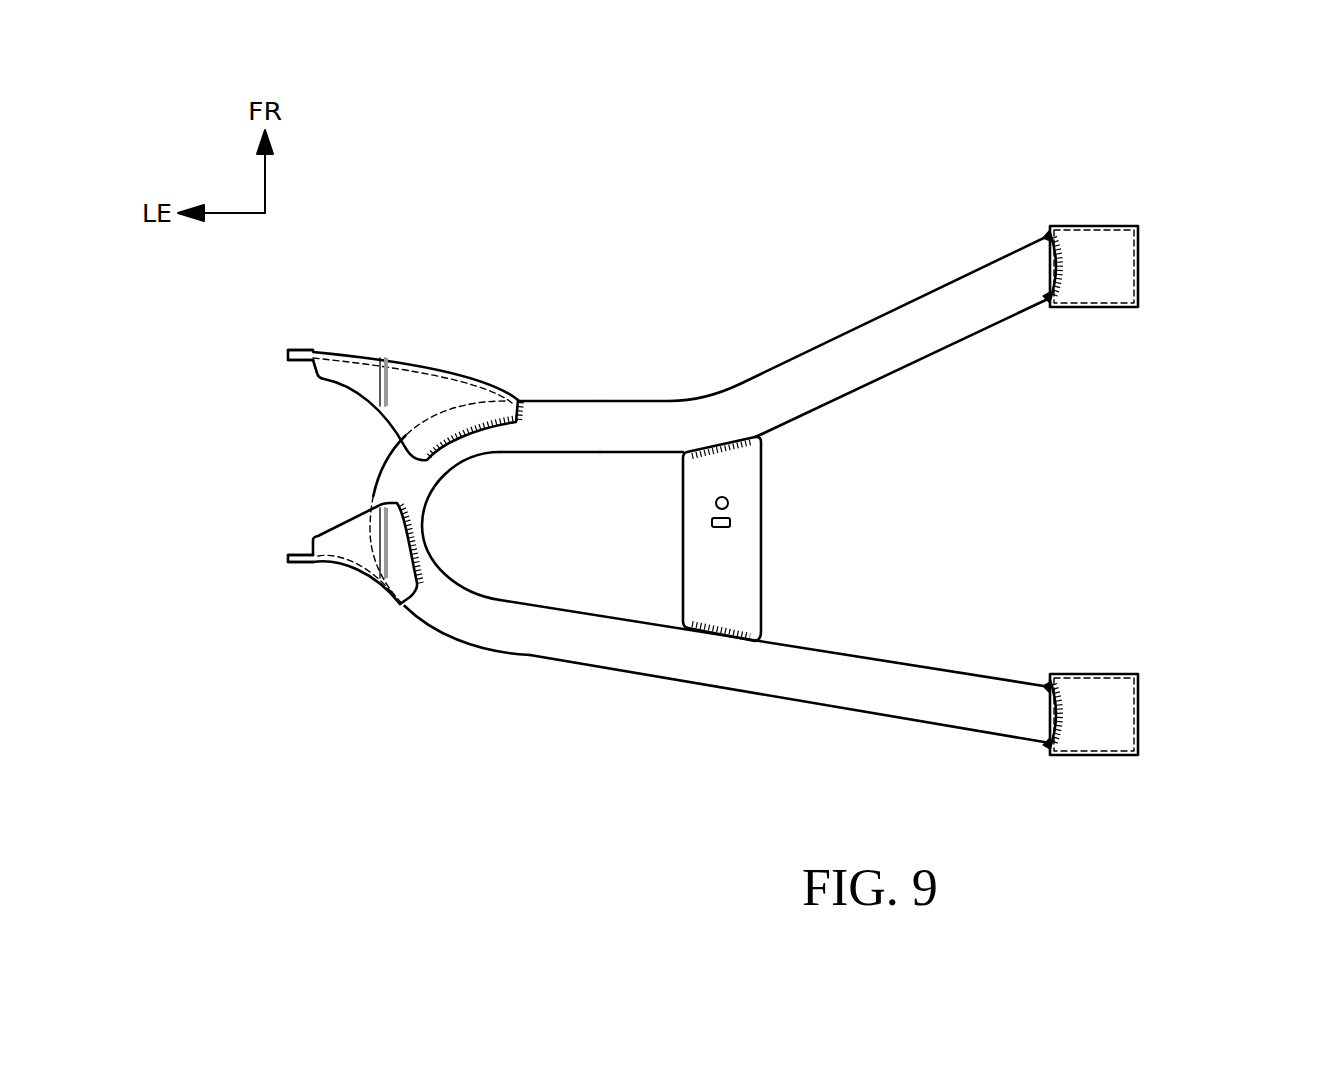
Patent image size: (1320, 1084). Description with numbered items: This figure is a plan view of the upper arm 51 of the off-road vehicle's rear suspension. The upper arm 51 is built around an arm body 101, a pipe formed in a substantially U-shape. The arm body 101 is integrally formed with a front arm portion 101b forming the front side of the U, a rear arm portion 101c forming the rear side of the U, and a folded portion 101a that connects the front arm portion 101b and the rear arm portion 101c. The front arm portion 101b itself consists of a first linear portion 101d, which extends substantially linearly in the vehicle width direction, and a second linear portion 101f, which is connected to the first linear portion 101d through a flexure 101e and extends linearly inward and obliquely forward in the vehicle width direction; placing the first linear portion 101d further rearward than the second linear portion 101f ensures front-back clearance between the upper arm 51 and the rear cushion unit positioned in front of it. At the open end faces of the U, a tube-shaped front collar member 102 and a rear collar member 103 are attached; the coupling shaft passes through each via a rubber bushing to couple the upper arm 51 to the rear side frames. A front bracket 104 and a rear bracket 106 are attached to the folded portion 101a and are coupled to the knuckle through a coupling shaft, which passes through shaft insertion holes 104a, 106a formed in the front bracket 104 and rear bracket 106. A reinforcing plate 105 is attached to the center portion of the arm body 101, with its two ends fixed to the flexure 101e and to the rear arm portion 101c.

The upper arm 51 is at (453, 212).
The arm body 101 is at (806, 344).
The folded portion 101a is at (410, 470).
The front arm portion 101b is at (598, 406).
The rear arm portion 101c is at (667, 668).
The first linear portion 101d is at (637, 412).
The flexure 101e is at (717, 407).
The second linear portion 101f is at (901, 320).
The front collar member 102 is at (1139, 264).
The rear collar member 103 is at (1139, 705).
The front bracket 104 is at (412, 376).
The shaft insertion hole 104a is at (315, 349).
The reinforcing plate 105 is at (752, 537).
The rear bracket 106 is at (366, 560).
The shaft insertion hole 106a is at (313, 566).